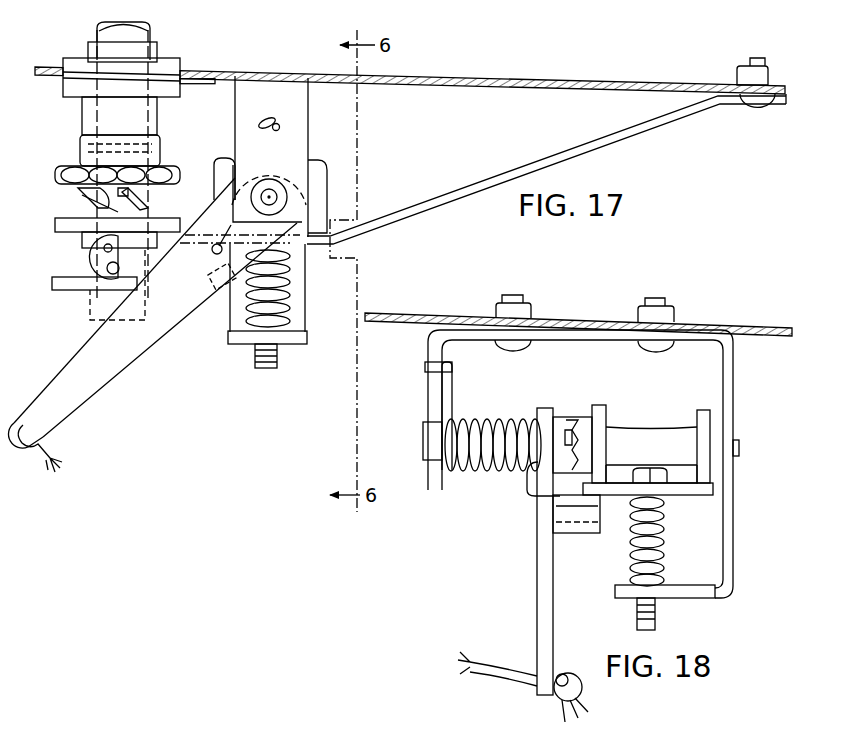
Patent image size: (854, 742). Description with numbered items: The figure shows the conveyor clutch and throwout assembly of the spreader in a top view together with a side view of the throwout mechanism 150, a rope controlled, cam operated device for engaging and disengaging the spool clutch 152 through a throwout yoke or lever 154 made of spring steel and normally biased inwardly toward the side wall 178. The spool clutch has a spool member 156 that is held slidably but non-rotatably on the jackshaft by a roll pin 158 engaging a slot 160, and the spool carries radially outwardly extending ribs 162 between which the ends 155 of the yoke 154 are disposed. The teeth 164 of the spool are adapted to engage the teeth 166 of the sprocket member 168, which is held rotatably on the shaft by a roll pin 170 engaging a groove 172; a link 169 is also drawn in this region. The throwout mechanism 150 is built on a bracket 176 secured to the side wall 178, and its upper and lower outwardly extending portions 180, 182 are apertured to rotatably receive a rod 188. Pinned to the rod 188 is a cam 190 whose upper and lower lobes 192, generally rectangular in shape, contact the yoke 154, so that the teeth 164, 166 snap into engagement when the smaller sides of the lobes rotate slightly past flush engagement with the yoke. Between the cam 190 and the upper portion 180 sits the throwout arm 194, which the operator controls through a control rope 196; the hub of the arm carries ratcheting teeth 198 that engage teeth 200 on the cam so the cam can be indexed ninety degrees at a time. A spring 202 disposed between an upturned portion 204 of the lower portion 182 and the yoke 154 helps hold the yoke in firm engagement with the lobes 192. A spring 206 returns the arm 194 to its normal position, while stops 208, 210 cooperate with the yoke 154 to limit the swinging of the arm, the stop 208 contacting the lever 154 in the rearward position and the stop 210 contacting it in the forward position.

In FIG. 17, the throwout mechanism 150 is at (362, 248).
In FIG. 18, the throwout mechanism 150 is at (462, 544).
In FIG. 17, the spool clutch 152 is at (202, 170).
In FIG. 17, the throwout yoke or lever 154 is at (404, 218).
In FIG. 18, the throwout yoke or lever 154 is at (692, 495).
In FIG. 17, the ends of the yoke 155 is at (95, 290).
In FIG. 17, the spool member 156 is at (92, 254).
In FIG. 17, the roll pin 158 is at (122, 268).
In FIG. 17, the slot 160 is at (82, 239).
In FIG. 17, the ribs 162 is at (55, 224).
In FIG. 17, the teeth of spool 164 is at (130, 206).
In FIG. 17, the teeth of sprocket member 166 is at (90, 195).
In FIG. 17, the sprocket member 168 is at (80, 156).
In FIG. 17, the link 169 is at (82, 203).
In FIG. 17, the roll pin 170 is at (150, 146).
In FIG. 17, the groove 172 is at (150, 153).
In FIG. 17, the bracket 176 is at (304, 142).
In FIG. 18, the bracket 176 is at (556, 340).
In FIG. 17, the side wall 178 is at (486, 90).
In FIG. 18, the side wall 178 is at (436, 320).
In FIG. 18, the upper outwardly extending portion 180 is at (432, 394).
In FIG. 18, the lower outwardly extending portion 182 is at (733, 394).
In FIG. 17, the rod 188 is at (286, 171).
In FIG. 18, the rod 188 is at (740, 446).
In FIG. 18, the cam 190 is at (650, 432).
In FIG. 17, the lobes 192 is at (322, 178).
In FIG. 18, the lobes 192 is at (600, 412).
In FIG. 17, the throwout arm 194 is at (106, 388).
In FIG. 18, the throwout arm 194 is at (537, 594).
In FIG. 17, the control rope 196 is at (42, 472).
In FIG. 18, the control rope 196 is at (502, 684).
In FIG. 18, the ratcheting teeth 198 is at (588, 398).
In FIG. 18, the teeth on the cam 200 is at (576, 466).
In FIG. 17, the spring 202 is at (290, 292).
In FIG. 18, the spring 202 is at (665, 548).
In FIG. 17, the upturned portion 204 is at (290, 344).
In FIG. 18, the upturned portion 204 is at (683, 600).
In FIG. 18, the spring 206 is at (478, 422).
In FIG. 17, the stop 208 is at (212, 256).
In FIG. 18, the stop 208 is at (553, 506).
In FIG. 17, the stop 210 is at (210, 285).
In FIG. 18, the stop 210 is at (553, 522).